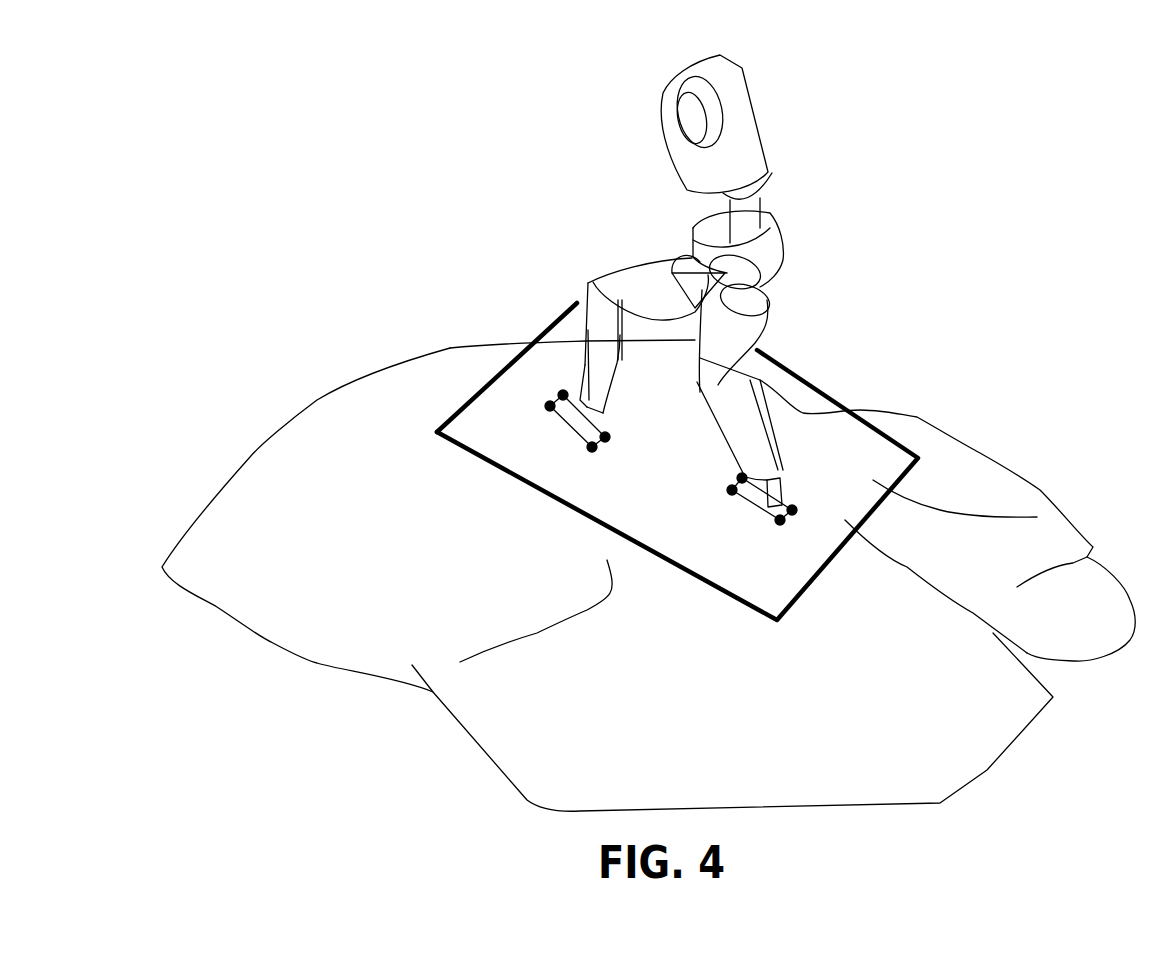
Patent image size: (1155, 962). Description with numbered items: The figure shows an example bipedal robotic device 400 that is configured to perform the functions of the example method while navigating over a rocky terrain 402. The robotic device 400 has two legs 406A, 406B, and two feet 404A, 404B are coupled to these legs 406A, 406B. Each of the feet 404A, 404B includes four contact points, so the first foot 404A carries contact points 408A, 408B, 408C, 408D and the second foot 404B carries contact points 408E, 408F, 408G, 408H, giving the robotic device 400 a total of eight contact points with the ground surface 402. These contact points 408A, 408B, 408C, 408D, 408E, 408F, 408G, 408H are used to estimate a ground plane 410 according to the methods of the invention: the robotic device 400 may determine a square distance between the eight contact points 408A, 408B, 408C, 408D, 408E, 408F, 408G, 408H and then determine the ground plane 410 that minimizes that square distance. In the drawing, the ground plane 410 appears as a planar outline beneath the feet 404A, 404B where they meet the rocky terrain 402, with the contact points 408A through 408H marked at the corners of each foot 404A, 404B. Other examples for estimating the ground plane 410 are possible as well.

The robotic device 400 is at (677, 314).
The rocky terrain 402 is at (1005, 482).
The foot 404A is at (578, 430).
The foot 404B is at (756, 513).
The leg 406A is at (617, 360).
The leg 406B is at (760, 427).
The contact point 408A is at (563, 390).
The contact point 408B is at (548, 406).
The contact point 408C is at (592, 452).
The contact point 408D is at (610, 438).
The contact point 408E is at (736, 473).
The contact point 408F is at (725, 490).
The contact point 408G is at (782, 527).
The contact point 408H is at (798, 509).
The ground plane 410 is at (808, 382).